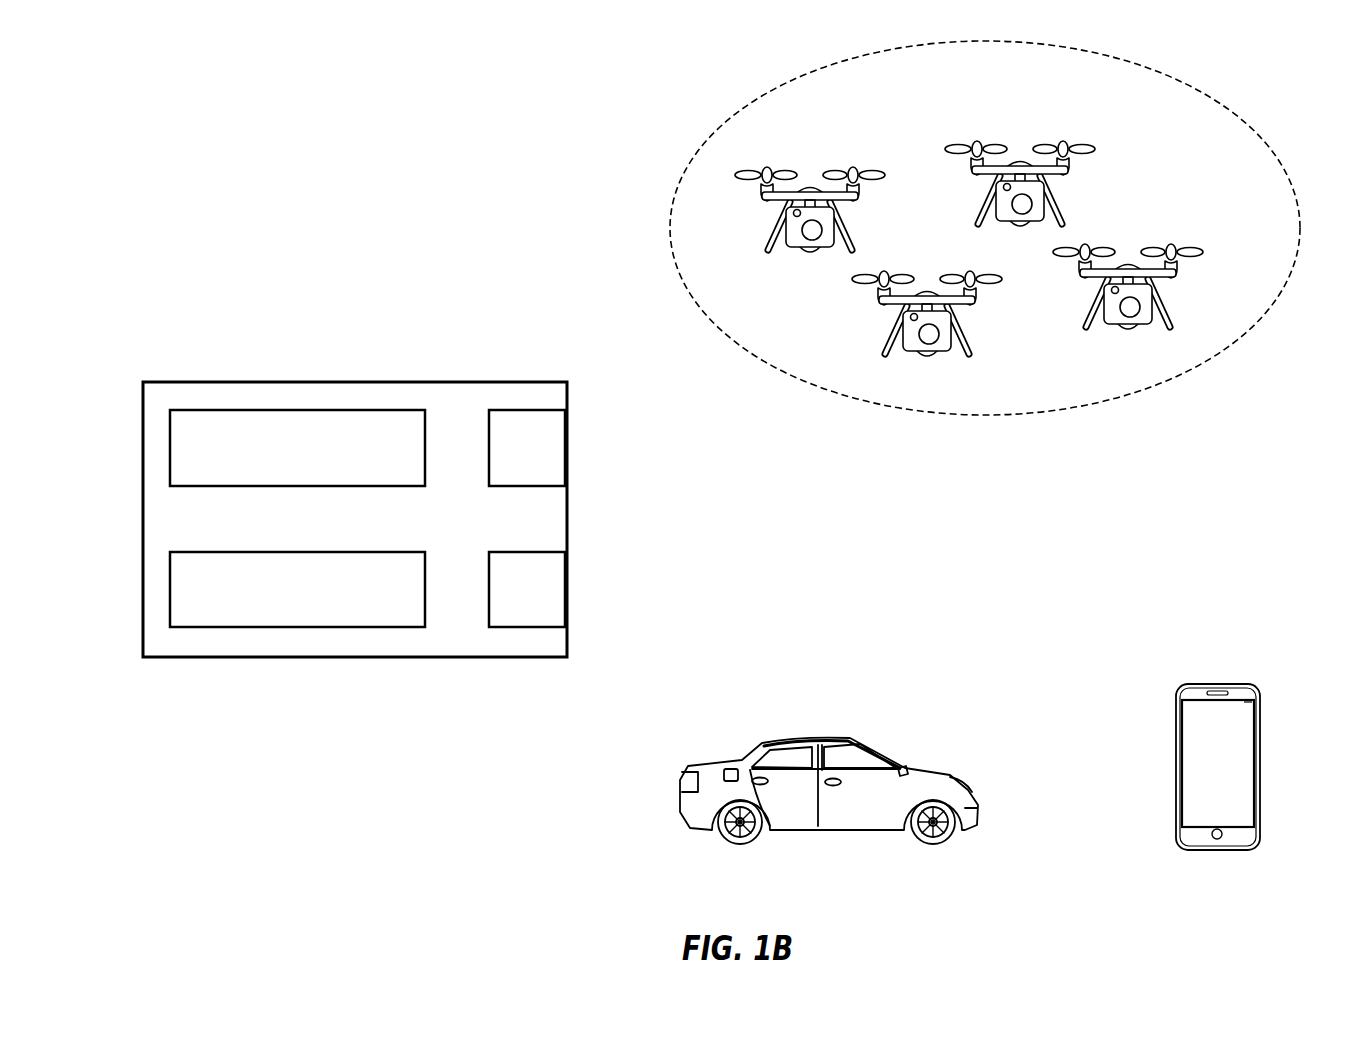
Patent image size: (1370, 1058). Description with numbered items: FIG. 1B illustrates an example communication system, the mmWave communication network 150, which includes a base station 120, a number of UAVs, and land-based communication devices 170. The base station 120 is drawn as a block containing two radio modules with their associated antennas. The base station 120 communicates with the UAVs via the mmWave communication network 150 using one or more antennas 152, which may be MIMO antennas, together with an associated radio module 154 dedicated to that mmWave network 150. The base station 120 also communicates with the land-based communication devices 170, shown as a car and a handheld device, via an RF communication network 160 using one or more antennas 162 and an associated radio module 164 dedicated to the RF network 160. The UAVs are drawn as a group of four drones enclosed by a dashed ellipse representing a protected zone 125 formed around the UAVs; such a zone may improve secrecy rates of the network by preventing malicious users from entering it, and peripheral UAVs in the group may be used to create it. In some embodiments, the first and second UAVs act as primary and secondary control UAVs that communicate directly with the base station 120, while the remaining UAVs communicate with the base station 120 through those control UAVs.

The mmWave communication network 150 is at (537, 88).
The RF communication network 160 is at (537, 810).
The protected zone 125 is at (1290, 190).
The base station 120 is at (510, 382).
The antennas 152 is at (509, 459).
The radio module 154 is at (279, 474).
The antennas 162 is at (509, 601).
The radio module 164 is at (279, 616).
The land-based communication devices 170 is at (907, 768).